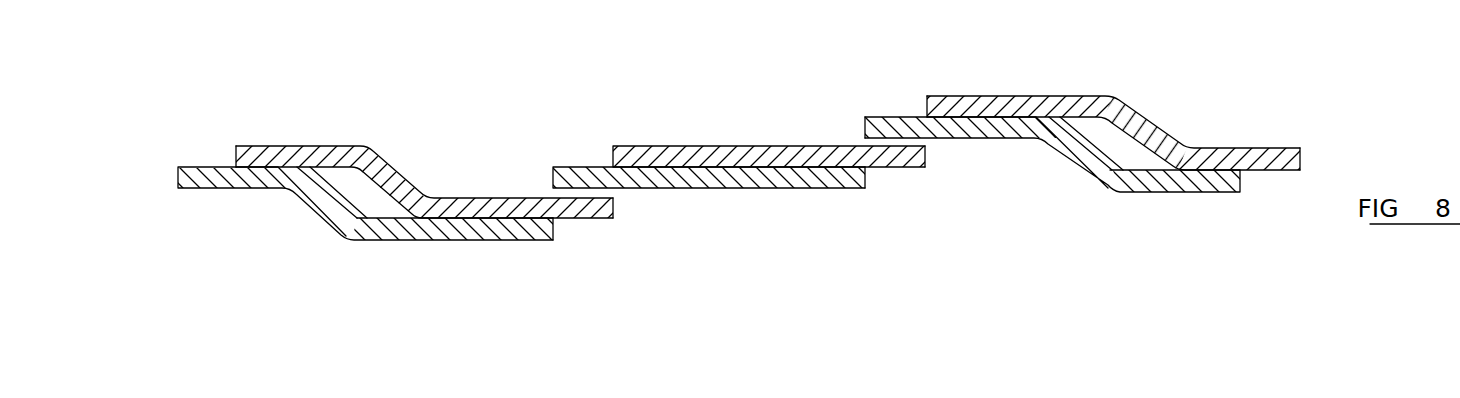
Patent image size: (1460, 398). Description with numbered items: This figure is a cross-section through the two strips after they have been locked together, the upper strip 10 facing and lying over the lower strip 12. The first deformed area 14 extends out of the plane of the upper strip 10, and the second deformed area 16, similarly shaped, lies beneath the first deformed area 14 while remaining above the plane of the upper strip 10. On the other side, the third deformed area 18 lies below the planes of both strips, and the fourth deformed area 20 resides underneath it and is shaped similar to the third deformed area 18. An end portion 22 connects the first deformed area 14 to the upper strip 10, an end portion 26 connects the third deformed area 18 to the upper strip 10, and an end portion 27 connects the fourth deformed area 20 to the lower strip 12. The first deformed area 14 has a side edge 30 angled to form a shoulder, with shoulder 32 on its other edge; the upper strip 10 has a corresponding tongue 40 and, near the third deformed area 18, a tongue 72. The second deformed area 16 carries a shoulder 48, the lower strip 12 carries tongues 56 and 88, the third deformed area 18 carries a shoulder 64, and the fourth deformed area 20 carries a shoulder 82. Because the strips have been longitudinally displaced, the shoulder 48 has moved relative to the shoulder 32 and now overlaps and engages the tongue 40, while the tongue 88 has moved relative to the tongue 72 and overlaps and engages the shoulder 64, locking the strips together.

The upper strip 10 is at (228, 153).
The lower strip 12 is at (170, 175).
The first deformed area 14 is at (1025, 95).
The second deformed area 16 is at (985, 139).
The third deformed area 18 is at (448, 197).
The fourth deformed area 20 is at (467, 242).
The end portion 22 is at (1150, 119).
The end portion 26 is at (390, 160).
The end portion 27 is at (312, 205).
The side edge 30 is at (1085, 168).
The shoulder 32 is at (926, 103).
The tongue 40 is at (927, 158).
The shoulder 48 is at (864, 128).
The tongue 56 is at (866, 180).
The shoulder 64 is at (616, 207).
The tongue 72 is at (613, 160).
The shoulder 82 is at (556, 228).
The tongue 88 is at (552, 177).